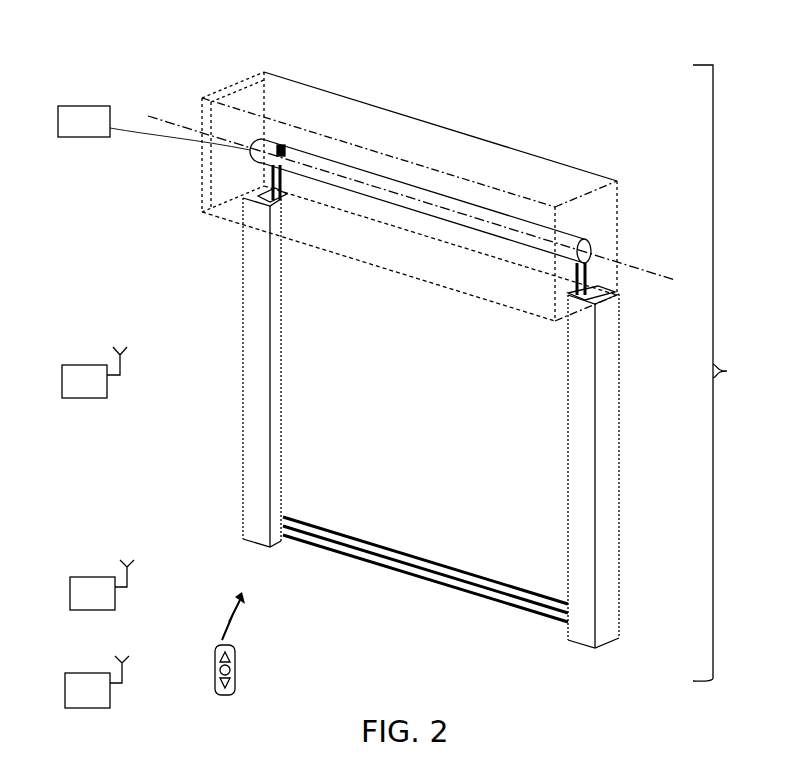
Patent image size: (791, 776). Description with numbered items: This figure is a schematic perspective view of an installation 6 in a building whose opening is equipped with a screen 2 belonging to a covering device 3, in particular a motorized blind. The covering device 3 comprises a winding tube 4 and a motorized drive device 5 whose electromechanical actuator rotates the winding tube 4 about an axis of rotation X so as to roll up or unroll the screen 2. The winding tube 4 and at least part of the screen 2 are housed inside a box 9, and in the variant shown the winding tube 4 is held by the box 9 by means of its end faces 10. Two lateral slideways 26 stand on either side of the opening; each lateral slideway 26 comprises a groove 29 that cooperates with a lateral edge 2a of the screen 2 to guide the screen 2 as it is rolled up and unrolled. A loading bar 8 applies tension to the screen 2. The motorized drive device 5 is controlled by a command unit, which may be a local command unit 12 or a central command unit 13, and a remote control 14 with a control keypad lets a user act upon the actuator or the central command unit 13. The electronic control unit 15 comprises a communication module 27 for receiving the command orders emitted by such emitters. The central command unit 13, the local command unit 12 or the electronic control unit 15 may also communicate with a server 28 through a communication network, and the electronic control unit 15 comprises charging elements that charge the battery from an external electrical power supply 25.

The screen 2 is at (440, 560).
The lateral edge 2a is at (281, 183).
The covering device 3 is at (216, 444).
The winding tube 4 is at (395, 183).
The motorized drive device 5 is at (312, 136).
The installation 6 is at (721, 373).
The loading bar 8 is at (490, 597).
The box 9 is at (543, 173).
The end faces 10 is at (208, 183).
The local command unit 12 is at (86, 588).
The central command unit 13 is at (82, 684).
The remote control 14 is at (235, 671).
The electronic control unit 15 is at (270, 147).
The external electrical power supply 25 is at (83, 117).
The lateral slideways 26 is at (257, 520).
The communication module 27 is at (279, 146).
The server 28 is at (80, 377).
The groove 29 is at (268, 195).
The axis of rotation X is at (648, 272).